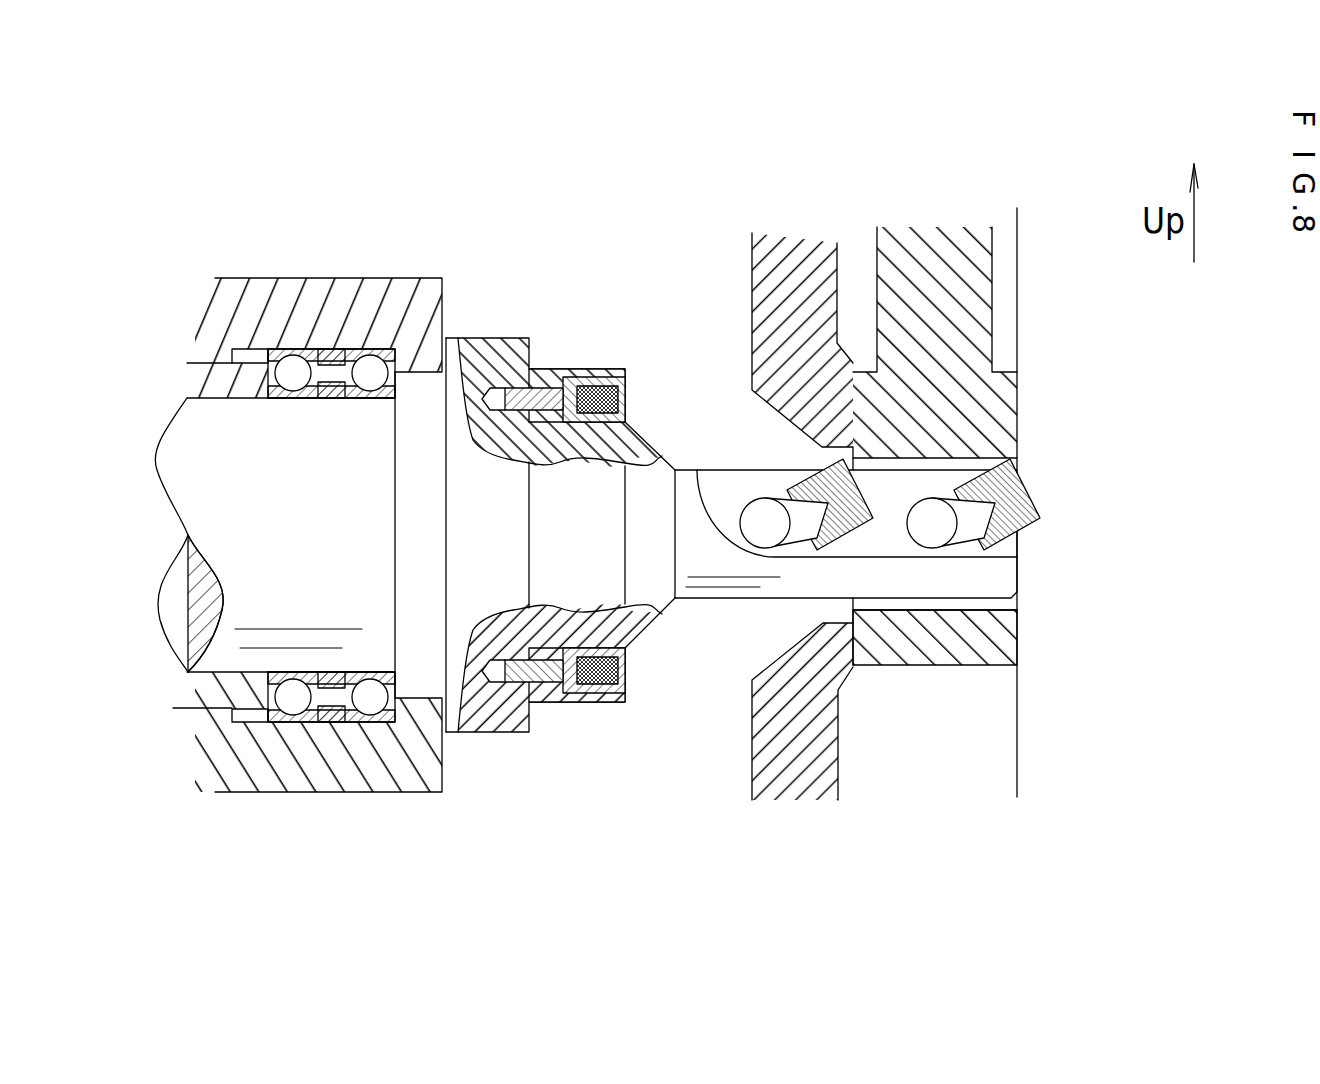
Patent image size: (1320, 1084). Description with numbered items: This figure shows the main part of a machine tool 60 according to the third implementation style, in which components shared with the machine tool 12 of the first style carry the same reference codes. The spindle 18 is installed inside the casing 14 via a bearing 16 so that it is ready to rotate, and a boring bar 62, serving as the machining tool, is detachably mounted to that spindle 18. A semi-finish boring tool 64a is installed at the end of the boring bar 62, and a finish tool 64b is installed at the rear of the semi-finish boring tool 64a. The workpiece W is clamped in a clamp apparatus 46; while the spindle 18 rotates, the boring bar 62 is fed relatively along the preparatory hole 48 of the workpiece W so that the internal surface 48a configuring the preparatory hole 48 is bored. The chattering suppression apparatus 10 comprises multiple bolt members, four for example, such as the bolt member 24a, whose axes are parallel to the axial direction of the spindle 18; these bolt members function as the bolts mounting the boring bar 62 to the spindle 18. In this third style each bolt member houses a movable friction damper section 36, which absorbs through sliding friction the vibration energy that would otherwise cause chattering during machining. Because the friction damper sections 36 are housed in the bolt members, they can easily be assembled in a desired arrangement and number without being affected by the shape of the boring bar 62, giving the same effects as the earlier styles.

The machine tool 60 is at (468, 150).
The chattering suppression apparatus 10 is at (547, 362).
The machine tool 12 is at (527, 808).
The casing 14 is at (325, 294).
The bearing 16 is at (367, 704).
The spindle 18 is at (190, 452).
The bolt member 24a is at (576, 696).
The friction damper section 36 is at (558, 369).
The clamp apparatus 46 is at (762, 282).
The preparatory hole 48 is at (1018, 612).
The internal surface 48a is at (1008, 604).
The boring bar 62 is at (708, 600).
The semi-finish boring tool 64a is at (1030, 480).
The finish tool 64b is at (814, 482).
The workpiece W is at (1020, 372).